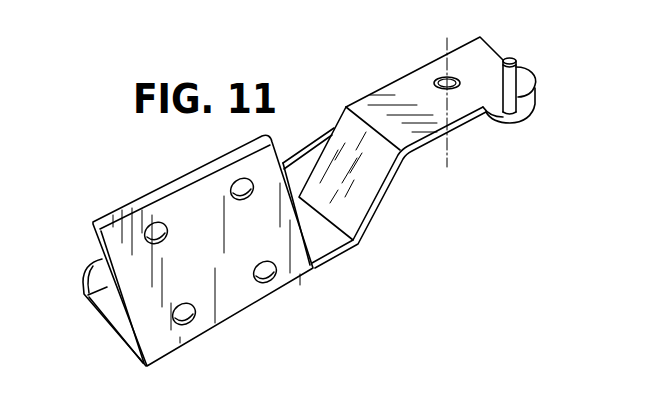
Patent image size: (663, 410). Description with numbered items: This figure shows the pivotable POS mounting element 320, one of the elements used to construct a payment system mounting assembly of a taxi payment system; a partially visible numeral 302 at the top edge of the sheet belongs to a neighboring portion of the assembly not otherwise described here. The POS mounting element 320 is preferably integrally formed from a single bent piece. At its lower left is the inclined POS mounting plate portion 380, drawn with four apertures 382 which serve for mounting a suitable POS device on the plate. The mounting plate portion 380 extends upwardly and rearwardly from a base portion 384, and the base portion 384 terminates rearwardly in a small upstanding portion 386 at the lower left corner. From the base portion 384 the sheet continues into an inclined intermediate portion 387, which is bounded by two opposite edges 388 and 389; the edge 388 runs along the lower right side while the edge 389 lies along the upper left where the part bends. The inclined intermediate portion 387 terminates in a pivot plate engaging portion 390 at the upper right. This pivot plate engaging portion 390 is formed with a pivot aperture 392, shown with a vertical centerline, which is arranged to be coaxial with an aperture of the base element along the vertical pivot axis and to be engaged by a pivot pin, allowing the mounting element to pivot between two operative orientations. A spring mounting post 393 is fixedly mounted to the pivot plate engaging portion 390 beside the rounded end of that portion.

The component (partially shown) 302 is at (94, 4).
The pivotable POS mounting element 320 is at (405, 222).
The inclined POS mounting plate portion 380 is at (178, 205).
The apertures 382 is at (245, 203).
The base portion 384 is at (115, 318).
The upstanding portion 386 is at (97, 278).
The inclined intermediate portion 387 is at (378, 168).
The edge 388 is at (372, 215).
The edge 389 is at (308, 137).
The pivot plate engaging portion 390 is at (487, 50).
The pivot aperture 392 is at (443, 43).
The spring mounting post 393 is at (517, 78).